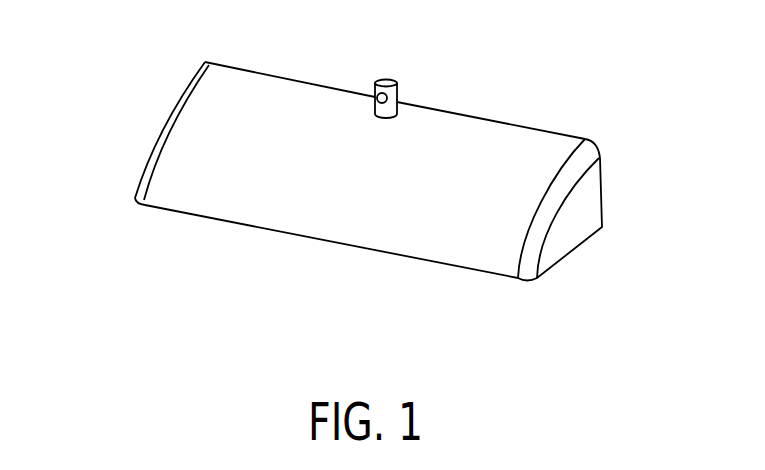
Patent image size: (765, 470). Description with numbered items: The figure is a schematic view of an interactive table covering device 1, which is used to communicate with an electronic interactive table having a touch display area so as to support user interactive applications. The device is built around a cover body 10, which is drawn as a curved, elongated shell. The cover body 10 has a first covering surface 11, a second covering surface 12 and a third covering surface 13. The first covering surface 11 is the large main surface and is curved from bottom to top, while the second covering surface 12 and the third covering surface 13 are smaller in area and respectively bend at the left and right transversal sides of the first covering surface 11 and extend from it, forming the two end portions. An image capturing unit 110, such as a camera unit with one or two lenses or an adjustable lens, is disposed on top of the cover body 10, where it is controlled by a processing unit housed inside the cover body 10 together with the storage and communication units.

The interactive table covering device 1 is at (61, 45).
The cover body 10 is at (478, 105).
The first covering surface 11 is at (325, 222).
The second covering surface 12 is at (582, 210).
The third covering surface 13 is at (157, 127).
The image capturing unit 110 is at (383, 79).